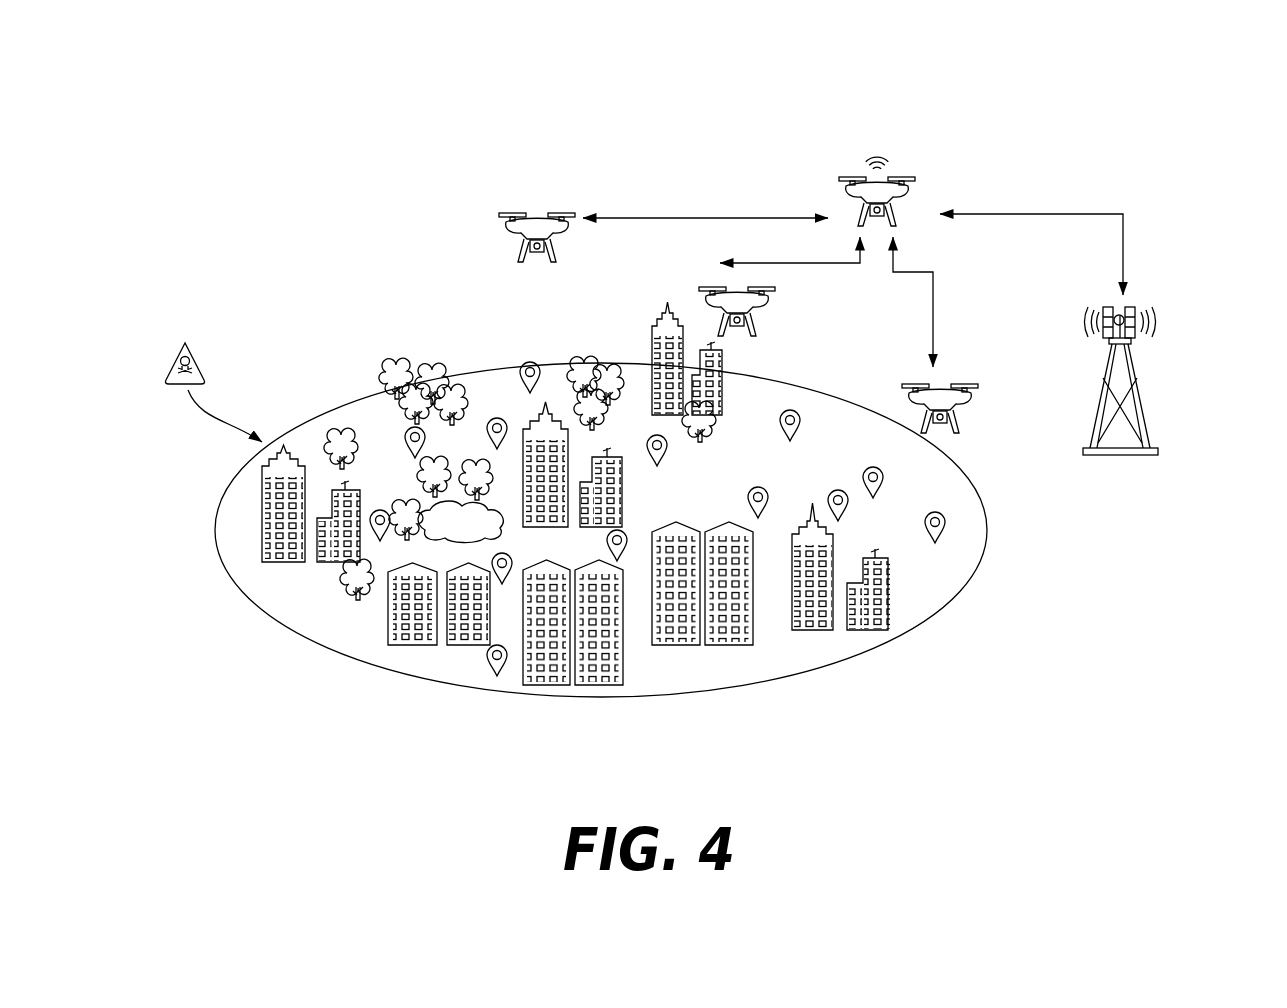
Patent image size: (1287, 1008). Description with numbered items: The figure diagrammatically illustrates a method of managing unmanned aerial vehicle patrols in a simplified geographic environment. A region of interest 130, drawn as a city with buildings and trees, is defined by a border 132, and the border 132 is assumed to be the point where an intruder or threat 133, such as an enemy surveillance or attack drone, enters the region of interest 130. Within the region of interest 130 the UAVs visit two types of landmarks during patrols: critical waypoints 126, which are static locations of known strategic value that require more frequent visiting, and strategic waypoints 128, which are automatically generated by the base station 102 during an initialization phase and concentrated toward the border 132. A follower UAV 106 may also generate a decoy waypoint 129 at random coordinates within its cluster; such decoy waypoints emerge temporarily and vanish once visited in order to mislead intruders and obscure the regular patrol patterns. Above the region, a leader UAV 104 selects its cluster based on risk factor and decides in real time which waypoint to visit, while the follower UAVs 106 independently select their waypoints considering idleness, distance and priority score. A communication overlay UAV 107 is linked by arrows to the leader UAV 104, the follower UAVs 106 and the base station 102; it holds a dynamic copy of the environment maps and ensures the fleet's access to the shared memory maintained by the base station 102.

The base station 102 is at (1150, 384).
The leader UAV 104 is at (558, 195).
The follower UAV 106 is at (778, 309).
The communication overlay UAV 107 is at (893, 137).
The critical waypoint 126 is at (655, 432).
The strategic waypoint 128 is at (405, 434).
The decoy waypoint 129 is at (852, 508).
The region of interest 130 is at (243, 652).
The border 132 is at (853, 657).
The intruder or threat 133 is at (197, 343).